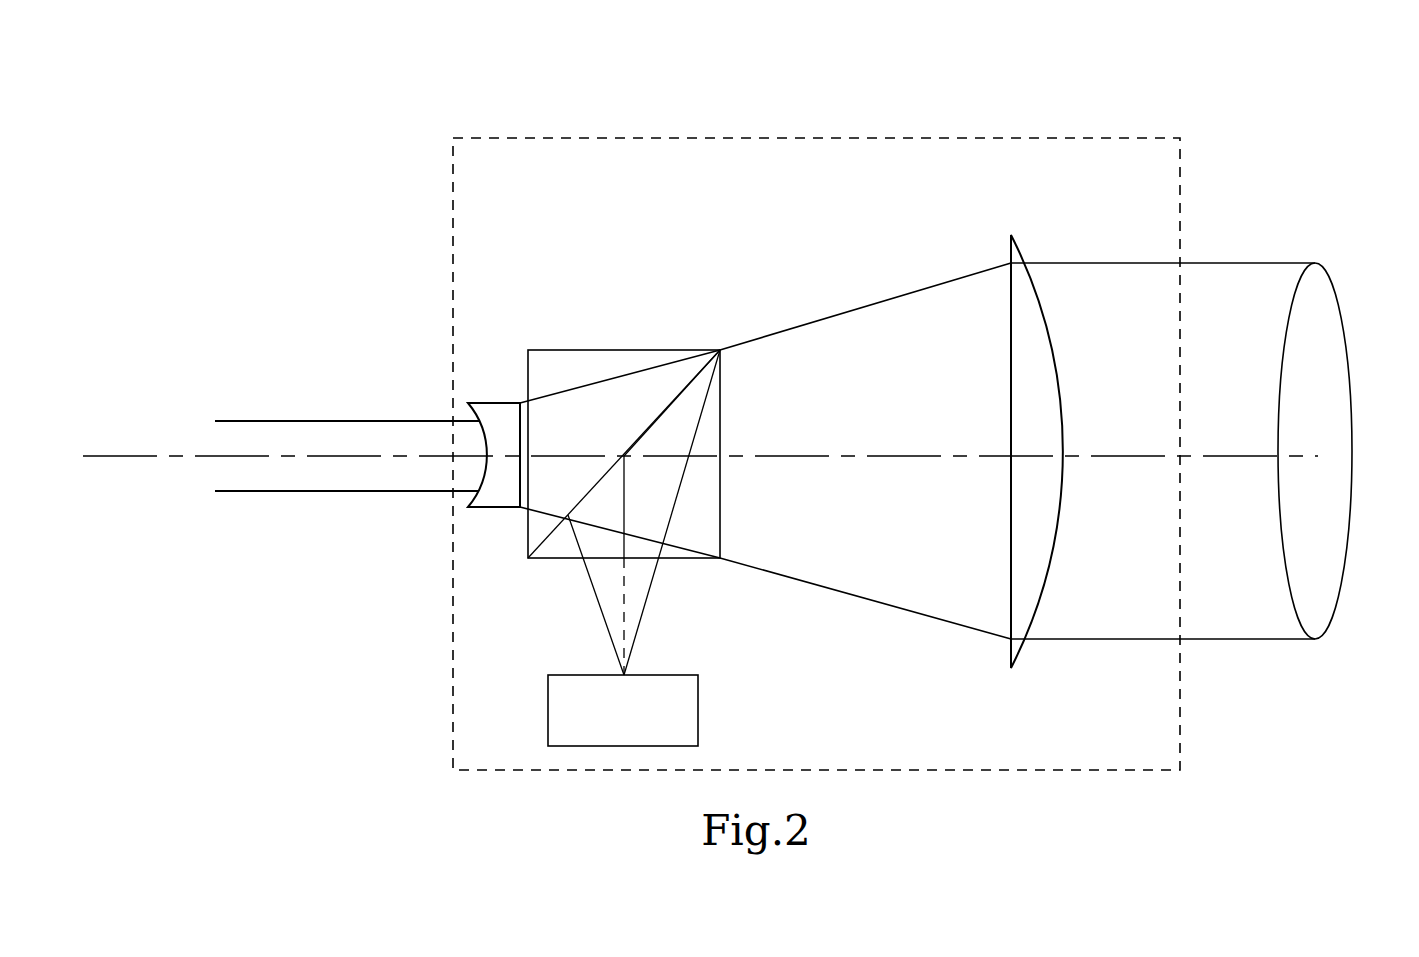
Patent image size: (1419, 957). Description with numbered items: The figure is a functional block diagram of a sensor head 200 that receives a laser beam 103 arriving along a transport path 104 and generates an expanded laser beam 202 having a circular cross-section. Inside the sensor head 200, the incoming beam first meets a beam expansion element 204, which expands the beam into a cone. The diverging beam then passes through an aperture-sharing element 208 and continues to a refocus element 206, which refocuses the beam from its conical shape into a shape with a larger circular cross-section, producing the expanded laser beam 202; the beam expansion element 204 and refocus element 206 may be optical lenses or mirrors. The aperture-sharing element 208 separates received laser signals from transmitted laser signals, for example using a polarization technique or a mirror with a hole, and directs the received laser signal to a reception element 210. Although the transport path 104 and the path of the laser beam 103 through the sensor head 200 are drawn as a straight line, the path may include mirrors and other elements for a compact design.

The sensor head 200 is at (806, 138).
The laser beam 103 is at (146, 456).
The transport path 104 is at (350, 421).
The beam expansion element 204 is at (493, 403).
The aperture-sharing element 208 is at (623, 350).
The refocus element 206 is at (1002, 246).
The expanded laser beam 202 is at (1336, 427).
The reception element 210 is at (684, 673).